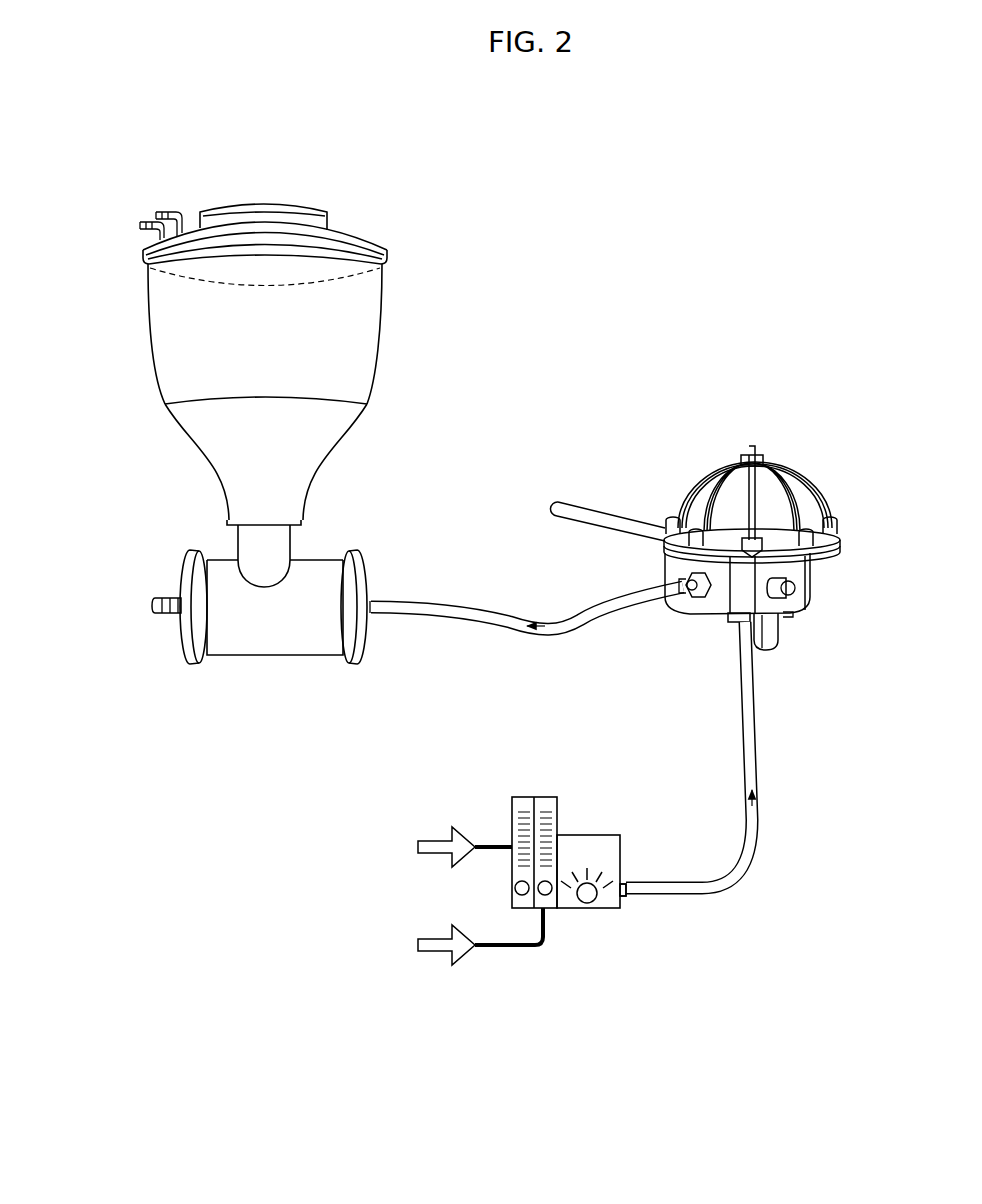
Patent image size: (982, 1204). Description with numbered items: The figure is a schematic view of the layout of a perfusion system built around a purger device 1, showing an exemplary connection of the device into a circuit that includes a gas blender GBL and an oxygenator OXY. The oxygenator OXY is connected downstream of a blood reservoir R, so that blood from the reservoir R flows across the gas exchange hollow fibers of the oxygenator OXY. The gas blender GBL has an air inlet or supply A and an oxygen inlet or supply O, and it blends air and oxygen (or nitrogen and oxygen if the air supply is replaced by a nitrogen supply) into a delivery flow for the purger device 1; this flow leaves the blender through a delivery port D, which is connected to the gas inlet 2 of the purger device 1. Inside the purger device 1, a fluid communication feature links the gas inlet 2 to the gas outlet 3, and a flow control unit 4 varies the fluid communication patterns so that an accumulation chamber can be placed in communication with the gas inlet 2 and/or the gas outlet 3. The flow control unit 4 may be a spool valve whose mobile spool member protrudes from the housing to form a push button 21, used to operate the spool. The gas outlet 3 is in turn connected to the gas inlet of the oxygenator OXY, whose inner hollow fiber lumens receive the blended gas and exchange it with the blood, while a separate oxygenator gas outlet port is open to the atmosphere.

The blood reservoir R is at (420, 348).
The oxygenator OXY is at (196, 527).
The purger device 1 is at (821, 465).
The gas inlet 2 is at (740, 623).
The gas outlet 3 is at (690, 599).
The flow control unit 4 is at (803, 590).
The push button 21 is at (788, 613).
The gas blender GBL is at (517, 981).
The air inlet/supply A is at (459, 837).
The oxygen inlet/supply O is at (475, 936).
The delivery port D is at (626, 895).